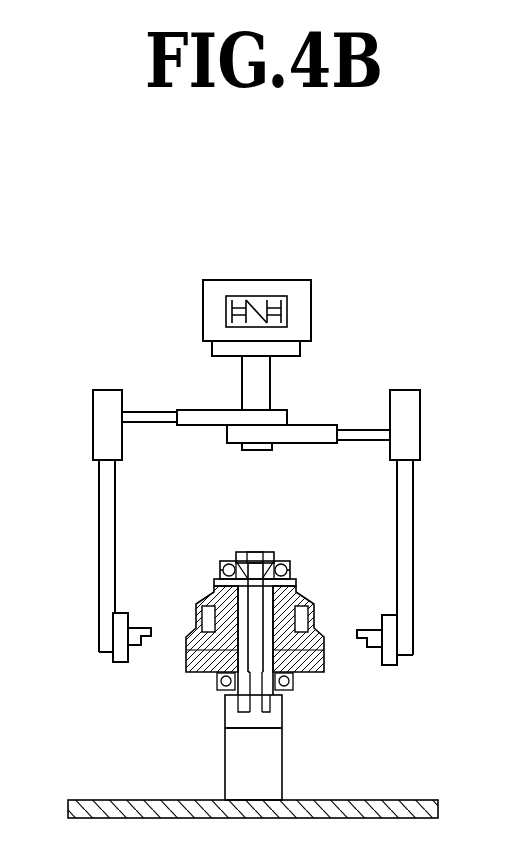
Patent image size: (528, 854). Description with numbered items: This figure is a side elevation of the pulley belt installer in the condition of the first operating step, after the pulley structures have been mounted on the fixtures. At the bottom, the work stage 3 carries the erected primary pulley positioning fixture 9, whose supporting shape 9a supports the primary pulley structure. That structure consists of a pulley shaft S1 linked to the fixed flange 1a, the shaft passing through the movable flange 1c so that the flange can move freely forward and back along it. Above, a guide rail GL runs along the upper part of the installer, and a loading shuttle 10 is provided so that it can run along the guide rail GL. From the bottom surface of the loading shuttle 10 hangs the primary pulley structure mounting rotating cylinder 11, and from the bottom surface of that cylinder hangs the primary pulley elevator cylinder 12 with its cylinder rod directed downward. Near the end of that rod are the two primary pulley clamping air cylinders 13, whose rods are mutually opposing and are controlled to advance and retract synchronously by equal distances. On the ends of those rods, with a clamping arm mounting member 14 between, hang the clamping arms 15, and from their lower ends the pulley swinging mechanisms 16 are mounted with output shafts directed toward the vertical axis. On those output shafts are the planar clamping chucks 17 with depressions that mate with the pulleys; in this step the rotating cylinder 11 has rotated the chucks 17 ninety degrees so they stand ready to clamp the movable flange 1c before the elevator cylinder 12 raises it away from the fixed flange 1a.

The guide rail GL is at (285, 301).
The loading shuttle 10 is at (299, 288).
The primary pulley structure mounting rotating cylinder 11 is at (292, 350).
The primary pulley elevator cylinder 12 is at (258, 392).
The primary pulley clamping air cylinder 13 is at (227, 437).
The clamping arm mounting member 14 is at (103, 437).
The clamping arm 15 is at (254, 598).
The pulley swinging mechanism 16 is at (113, 661).
The clamping chuck 17 is at (140, 630).
The fixed flange 1a is at (261, 651).
The movable flange 1c is at (203, 668).
The pulley shaft S1 is at (297, 676).
The supporting shape 9a is at (285, 719).
The primary pulley positioning fixture 9 is at (290, 782).
The work stage 3 is at (392, 795).